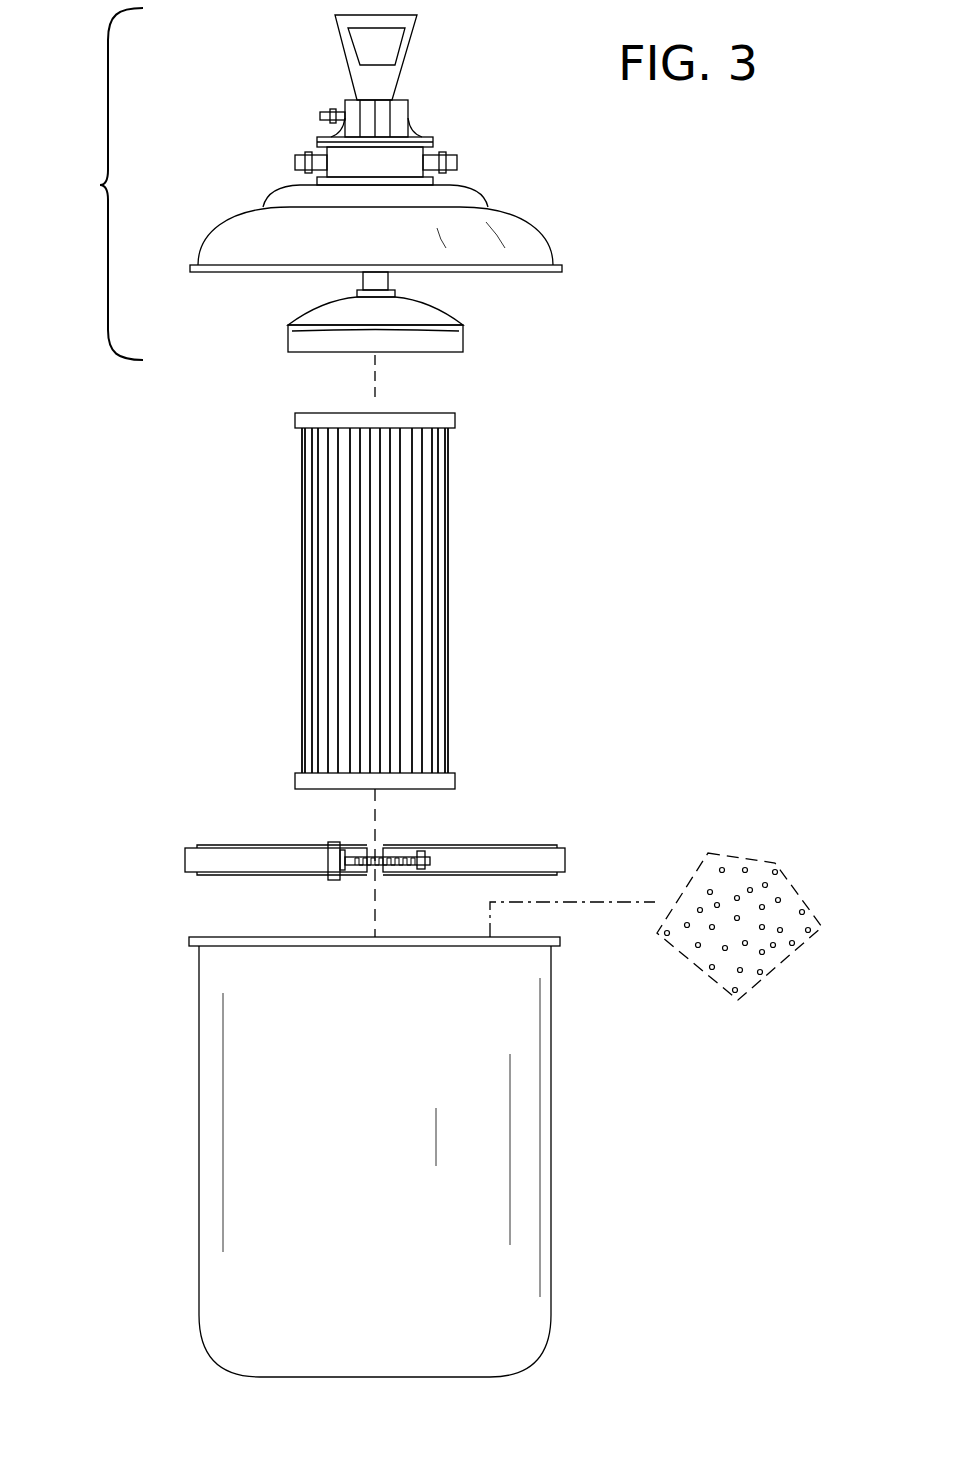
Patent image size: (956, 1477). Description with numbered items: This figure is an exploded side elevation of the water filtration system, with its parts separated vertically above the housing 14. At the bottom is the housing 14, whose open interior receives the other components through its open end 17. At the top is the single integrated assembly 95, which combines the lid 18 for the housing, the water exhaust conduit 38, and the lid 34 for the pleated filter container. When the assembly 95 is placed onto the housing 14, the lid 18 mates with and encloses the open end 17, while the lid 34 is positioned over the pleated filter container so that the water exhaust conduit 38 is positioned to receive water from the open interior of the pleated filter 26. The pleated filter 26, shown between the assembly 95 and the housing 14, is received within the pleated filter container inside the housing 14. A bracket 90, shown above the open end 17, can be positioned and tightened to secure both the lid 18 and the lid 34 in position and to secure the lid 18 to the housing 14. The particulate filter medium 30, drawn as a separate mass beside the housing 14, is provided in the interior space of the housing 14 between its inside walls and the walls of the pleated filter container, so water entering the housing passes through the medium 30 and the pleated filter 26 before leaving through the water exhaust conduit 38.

The integrated assembly 95 is at (100, 185).
The lid 18 is at (532, 223).
The water exhaust conduit 38 is at (363, 282).
The lid 34 is at (437, 312).
The pleated filter 26 is at (462, 636).
The bracket 90 is at (565, 860).
The particulate filter medium 30 is at (778, 900).
The open end 17 is at (262, 937).
The housing 14 is at (552, 1165).